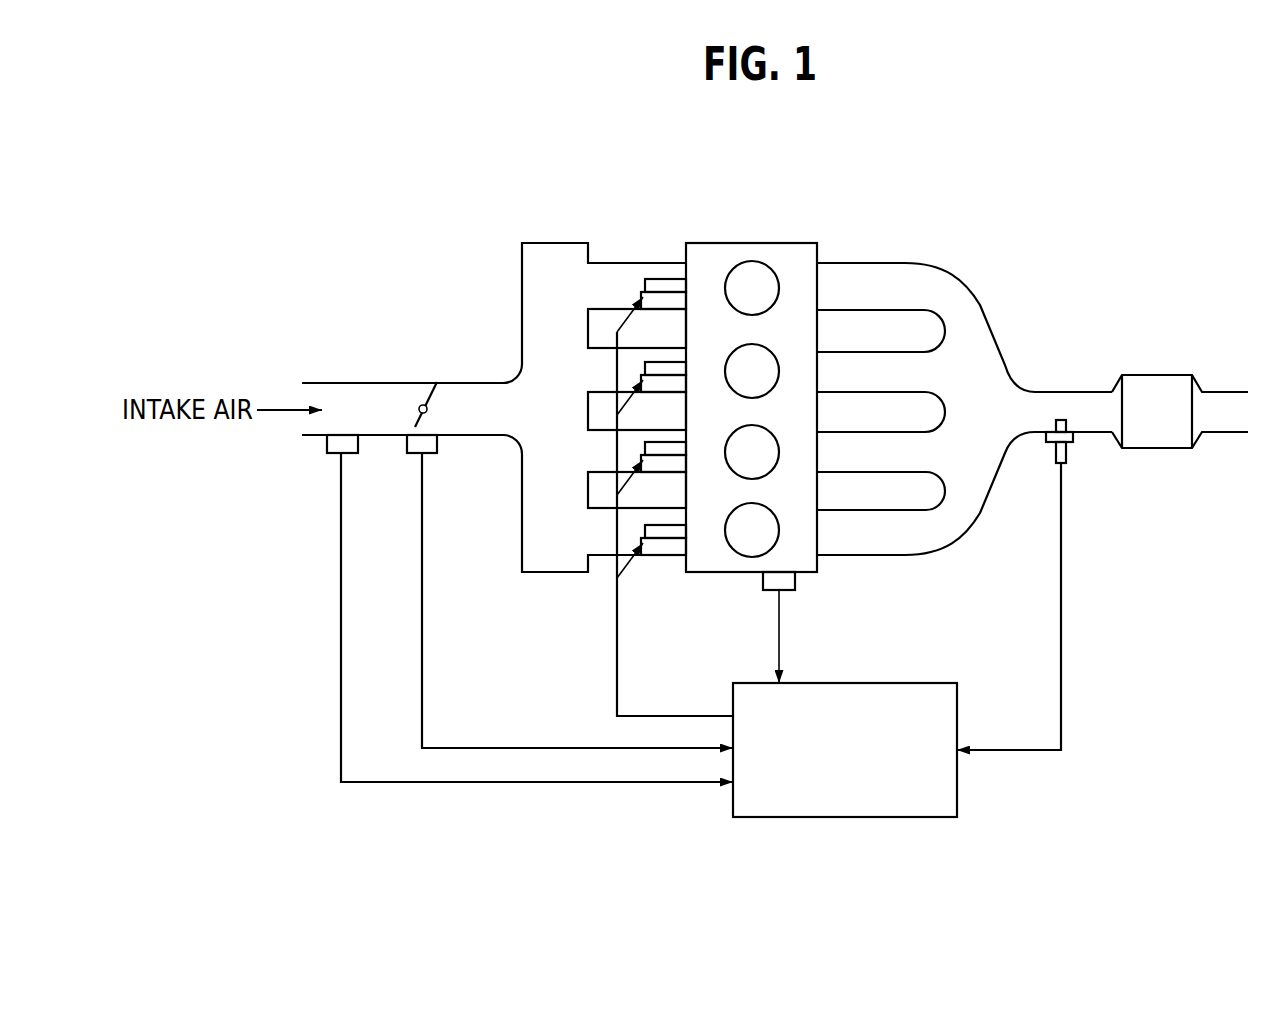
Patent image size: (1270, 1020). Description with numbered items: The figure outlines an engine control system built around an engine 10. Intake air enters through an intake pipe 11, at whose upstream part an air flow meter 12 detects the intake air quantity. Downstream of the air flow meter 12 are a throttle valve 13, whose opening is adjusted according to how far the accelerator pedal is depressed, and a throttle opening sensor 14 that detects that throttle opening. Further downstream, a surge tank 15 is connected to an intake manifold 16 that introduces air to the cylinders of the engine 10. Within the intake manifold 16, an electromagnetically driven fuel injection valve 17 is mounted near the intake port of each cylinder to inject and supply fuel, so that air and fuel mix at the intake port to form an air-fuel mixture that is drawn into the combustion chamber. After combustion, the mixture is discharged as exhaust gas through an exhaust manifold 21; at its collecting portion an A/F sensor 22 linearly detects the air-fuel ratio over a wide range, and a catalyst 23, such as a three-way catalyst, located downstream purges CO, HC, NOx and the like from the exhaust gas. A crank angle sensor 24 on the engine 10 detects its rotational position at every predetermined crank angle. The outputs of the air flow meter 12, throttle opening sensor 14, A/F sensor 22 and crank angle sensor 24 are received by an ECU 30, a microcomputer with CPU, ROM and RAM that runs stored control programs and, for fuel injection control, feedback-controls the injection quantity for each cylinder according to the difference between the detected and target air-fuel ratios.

The engine 10 is at (980, 228).
The intake pipe 11 is at (372, 382).
The air flow meter 12 is at (330, 455).
The throttle valve 13 is at (437, 382).
The throttle opening sensor 14 is at (398, 455).
The surge tank 15 is at (557, 242).
The intake manifold 16 is at (627, 262).
The fuel injection valve 17 is at (667, 279).
The exhaust manifold 21 is at (992, 323).
The A/F sensor 22 is at (1068, 455).
The catalyst 23 is at (1180, 449).
The crank angle sensor 24 is at (795, 591).
The ECU 30 is at (912, 683).